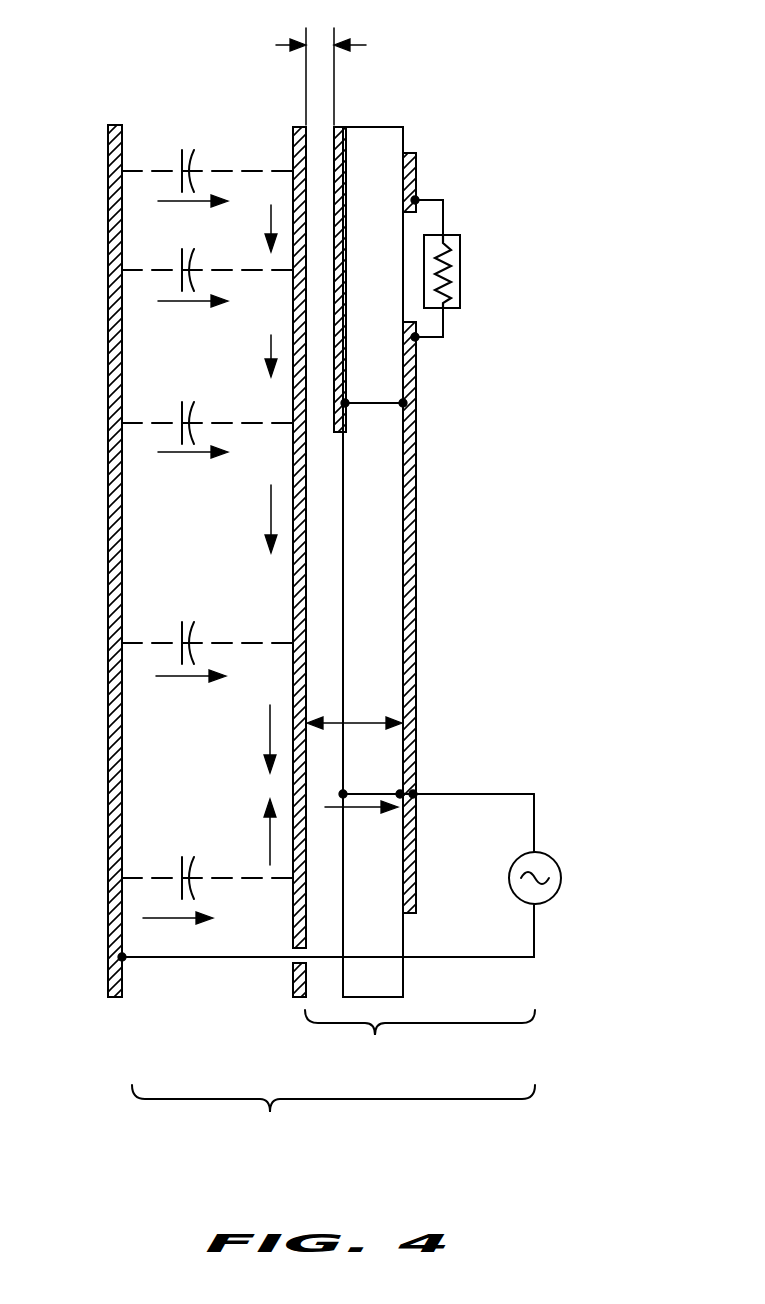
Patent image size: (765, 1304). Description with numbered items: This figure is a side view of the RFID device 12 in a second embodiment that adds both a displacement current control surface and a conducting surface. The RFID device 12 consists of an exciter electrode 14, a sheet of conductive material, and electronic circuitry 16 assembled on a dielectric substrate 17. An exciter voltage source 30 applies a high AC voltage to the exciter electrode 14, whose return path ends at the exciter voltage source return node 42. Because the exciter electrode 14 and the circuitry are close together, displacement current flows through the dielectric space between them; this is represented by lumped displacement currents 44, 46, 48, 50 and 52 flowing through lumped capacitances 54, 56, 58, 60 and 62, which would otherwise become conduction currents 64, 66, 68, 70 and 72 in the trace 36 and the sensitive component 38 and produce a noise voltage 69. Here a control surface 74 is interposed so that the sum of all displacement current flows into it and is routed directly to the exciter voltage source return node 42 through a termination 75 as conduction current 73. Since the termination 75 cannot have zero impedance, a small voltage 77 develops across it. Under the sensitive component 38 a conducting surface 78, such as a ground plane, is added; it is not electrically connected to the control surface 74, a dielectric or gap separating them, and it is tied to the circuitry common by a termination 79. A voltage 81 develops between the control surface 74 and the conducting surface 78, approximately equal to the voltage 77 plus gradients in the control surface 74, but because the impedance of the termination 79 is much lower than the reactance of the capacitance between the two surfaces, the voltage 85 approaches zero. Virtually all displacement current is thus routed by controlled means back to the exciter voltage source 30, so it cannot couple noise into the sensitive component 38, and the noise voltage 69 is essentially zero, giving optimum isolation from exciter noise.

The RFID device 12 is at (333, 1117).
The exciter electrode 14 is at (108, 145).
The electronic circuitry 16 is at (420, 1041).
The substrate 17 is at (401, 127).
The exciter voltage source 30 is at (560, 868).
The trace 36 is at (417, 160).
The sensitive component 38 is at (460, 240).
The exciter voltage source return node 42 is at (414, 795).
The lumped displacement current 44 is at (193, 213).
The lumped displacement current 46 is at (193, 313).
The lumped displacement current 48 is at (193, 467).
The lumped displacement current 50 is at (191, 690).
The lumped displacement current 52 is at (197, 922).
The lumped capacitance 54 is at (207, 169).
The lumped capacitance 56 is at (207, 268).
The lumped capacitance 58 is at (207, 421).
The lumped capacitance 60 is at (207, 641).
The lumped capacitance 62 is at (207, 876).
The conduction current 64 is at (258, 228).
The conduction current 66 is at (258, 356).
The conduction current 68 is at (260, 516).
The noise voltage 69 is at (493, 275).
The conduction current 70 is at (258, 739).
The conduction current 72 is at (259, 832).
The conduction current 73 is at (361, 817).
The control surface 74 is at (294, 135).
The termination 75 is at (380, 792).
The voltage 77 is at (354, 708).
The conducting surface 78 is at (341, 127).
The termination 79 is at (380, 404).
The voltage 81 is at (321, 62).
The voltage 85 is at (377, 346).